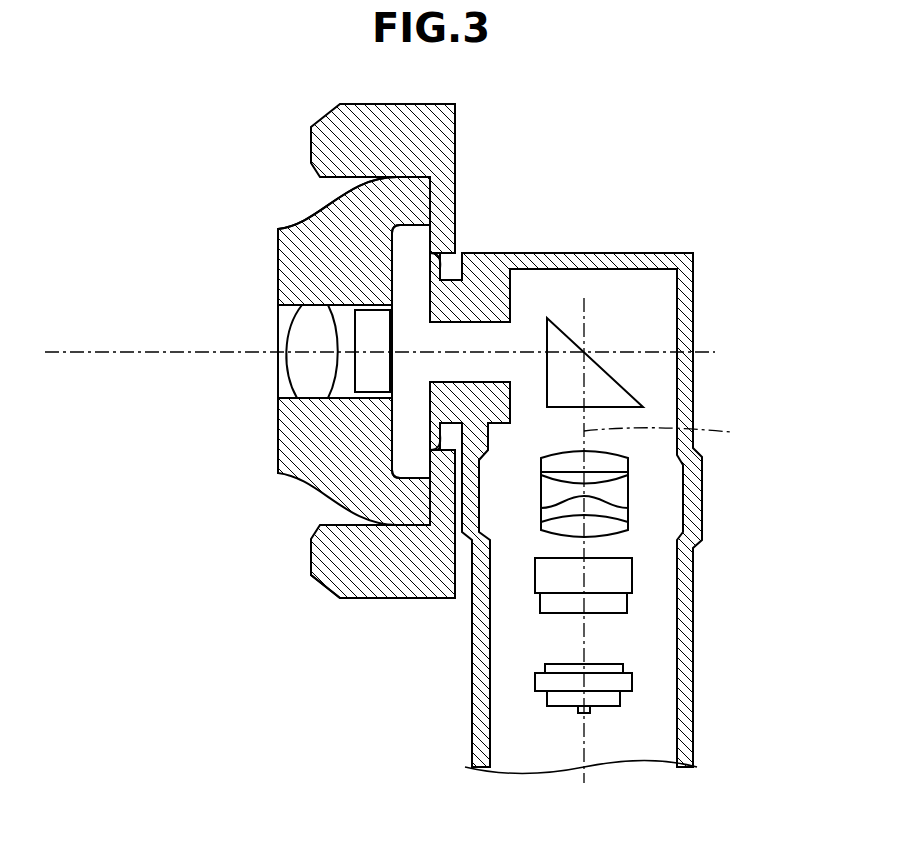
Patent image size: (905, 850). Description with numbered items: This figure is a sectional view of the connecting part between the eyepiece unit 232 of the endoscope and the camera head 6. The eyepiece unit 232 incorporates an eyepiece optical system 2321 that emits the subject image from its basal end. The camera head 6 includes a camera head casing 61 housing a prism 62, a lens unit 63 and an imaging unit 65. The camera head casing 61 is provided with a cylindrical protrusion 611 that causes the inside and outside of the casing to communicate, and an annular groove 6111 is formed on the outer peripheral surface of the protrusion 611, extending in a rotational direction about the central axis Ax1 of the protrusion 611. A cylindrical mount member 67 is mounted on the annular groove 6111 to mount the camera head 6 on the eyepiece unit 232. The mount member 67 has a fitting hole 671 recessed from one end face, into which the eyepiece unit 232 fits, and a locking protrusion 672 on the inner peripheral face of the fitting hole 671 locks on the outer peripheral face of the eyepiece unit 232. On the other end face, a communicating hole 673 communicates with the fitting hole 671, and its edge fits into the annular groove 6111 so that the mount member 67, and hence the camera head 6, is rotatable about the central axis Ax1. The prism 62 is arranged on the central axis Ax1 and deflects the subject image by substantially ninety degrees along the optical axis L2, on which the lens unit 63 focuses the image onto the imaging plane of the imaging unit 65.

The camera head 6 is at (603, 472).
The camera head casing 61 is at (697, 380).
The protrusion 611 is at (452, 303).
The annular groove 6111 is at (462, 268).
The prism 62 is at (615, 378).
The lens unit 63 is at (628, 497).
The imaging unit 65 is at (633, 682).
The mount member 67 is at (458, 112).
The fitting hole 671 is at (402, 528).
The locking protrusion 672 is at (352, 178).
The communicating hole 673 is at (450, 418).
The eyepiece unit 232 is at (290, 248).
The eyepiece optical system 2321 is at (372, 322).
The central axis of the protrusion Ax1 is at (150, 350).
The optical axis L2 is at (671, 540).